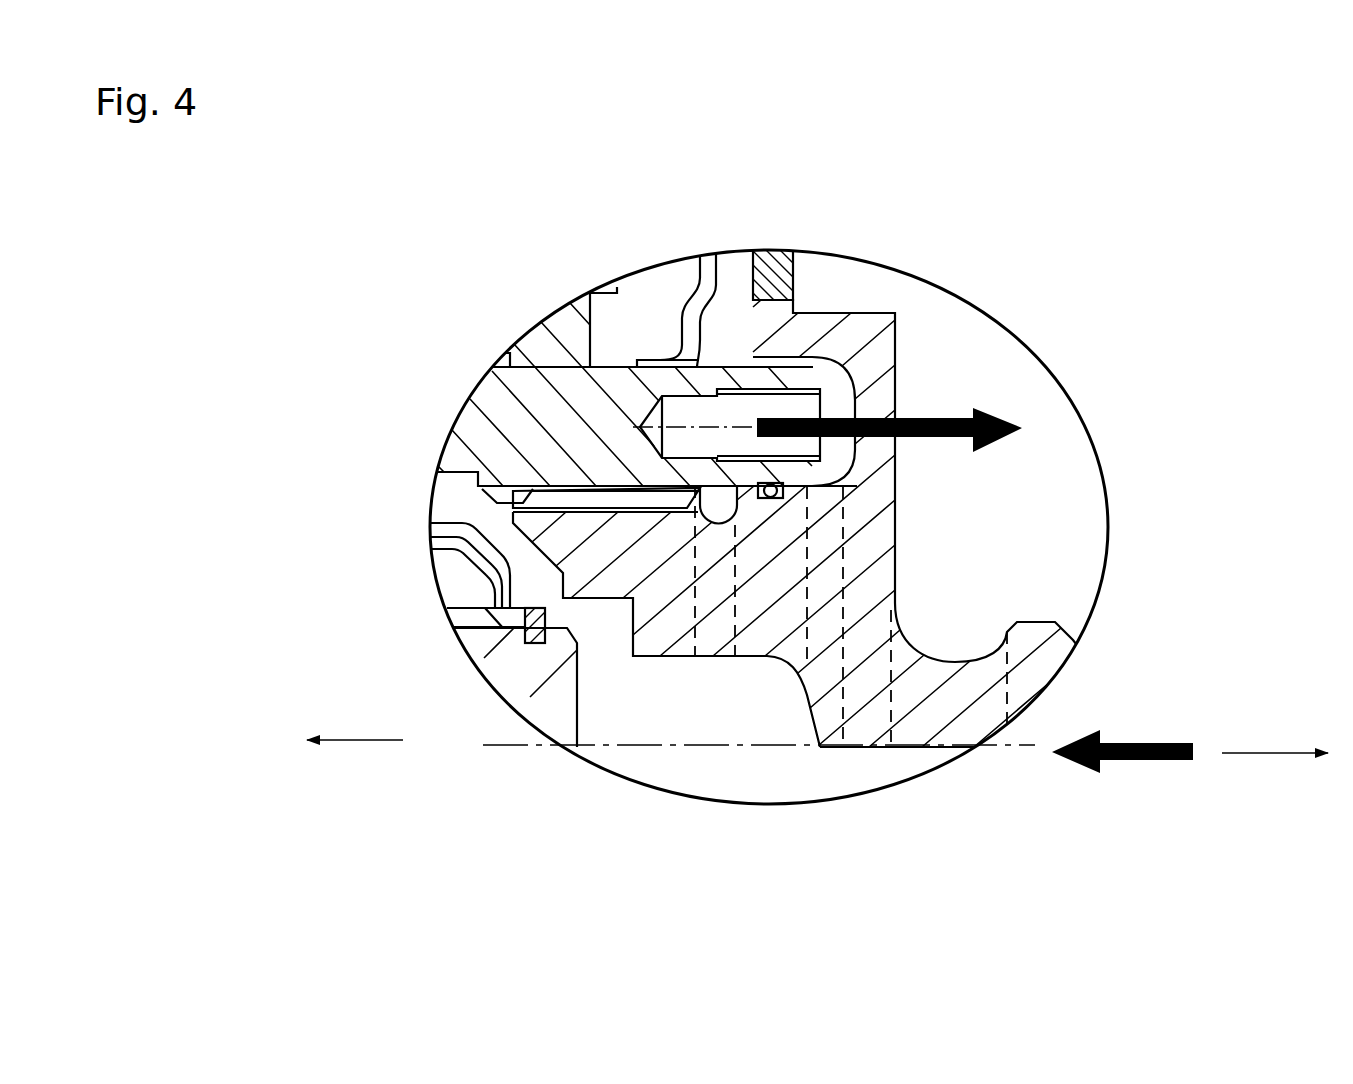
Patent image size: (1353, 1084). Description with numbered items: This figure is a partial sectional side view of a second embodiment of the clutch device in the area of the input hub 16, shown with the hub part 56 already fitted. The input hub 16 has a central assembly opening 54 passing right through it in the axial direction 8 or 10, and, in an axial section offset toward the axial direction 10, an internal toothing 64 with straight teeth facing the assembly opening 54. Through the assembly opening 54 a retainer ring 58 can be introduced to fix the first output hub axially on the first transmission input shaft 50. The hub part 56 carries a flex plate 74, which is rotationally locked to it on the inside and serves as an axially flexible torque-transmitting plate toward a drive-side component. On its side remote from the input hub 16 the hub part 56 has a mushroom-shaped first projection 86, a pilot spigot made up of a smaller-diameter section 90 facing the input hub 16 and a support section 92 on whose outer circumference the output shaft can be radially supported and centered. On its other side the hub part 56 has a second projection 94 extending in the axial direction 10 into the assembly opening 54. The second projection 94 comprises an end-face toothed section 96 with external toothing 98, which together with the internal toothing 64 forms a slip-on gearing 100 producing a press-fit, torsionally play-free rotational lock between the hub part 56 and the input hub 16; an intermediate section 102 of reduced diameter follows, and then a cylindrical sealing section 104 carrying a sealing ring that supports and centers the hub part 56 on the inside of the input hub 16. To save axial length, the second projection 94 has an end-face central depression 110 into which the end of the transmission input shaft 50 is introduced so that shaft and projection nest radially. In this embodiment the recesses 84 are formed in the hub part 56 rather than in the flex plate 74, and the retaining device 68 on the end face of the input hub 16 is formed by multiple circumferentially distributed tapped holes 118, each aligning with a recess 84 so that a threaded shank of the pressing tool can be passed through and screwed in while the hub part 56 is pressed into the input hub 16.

The axial direction 8 is at (1277, 755).
The axial direction 10 is at (353, 742).
The input hub 16 is at (545, 403).
The first transmission input shaft 50 is at (522, 673).
The assembly opening 54 is at (645, 687).
The hub part 56 is at (900, 519).
The retainer ring 58 is at (485, 608).
The internal toothing 64 is at (502, 497).
The retaining device 68 is at (633, 423).
The flex plate 74 is at (799, 272).
The recesses 84 is at (876, 400).
The first projection 86 is at (1001, 757).
The section facing the input hub 90 is at (952, 723).
The support section 92 is at (1038, 653).
The second projection 94 is at (809, 724).
The toothed section 96 is at (618, 557).
The external toothing 98 is at (577, 498).
The slip-on gearing 100 is at (600, 480).
The intermediate section 102 is at (713, 588).
The sealing section 104 is at (768, 623).
The central depression 110 is at (662, 727).
The tapped holes 118 is at (713, 382).